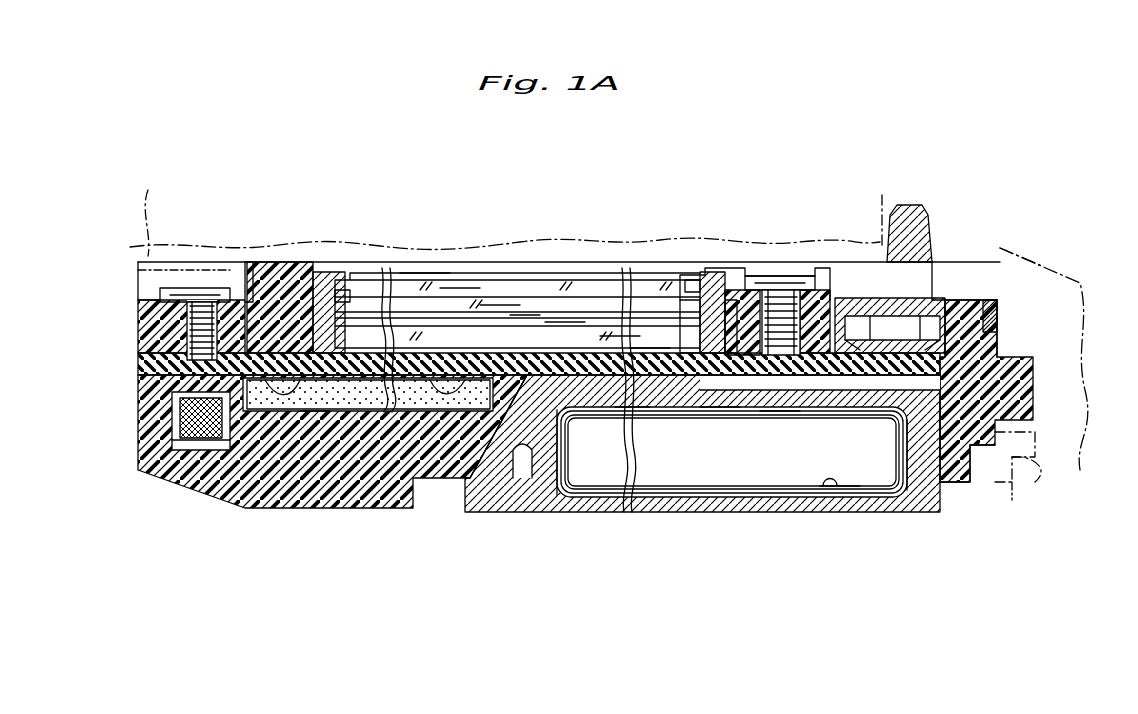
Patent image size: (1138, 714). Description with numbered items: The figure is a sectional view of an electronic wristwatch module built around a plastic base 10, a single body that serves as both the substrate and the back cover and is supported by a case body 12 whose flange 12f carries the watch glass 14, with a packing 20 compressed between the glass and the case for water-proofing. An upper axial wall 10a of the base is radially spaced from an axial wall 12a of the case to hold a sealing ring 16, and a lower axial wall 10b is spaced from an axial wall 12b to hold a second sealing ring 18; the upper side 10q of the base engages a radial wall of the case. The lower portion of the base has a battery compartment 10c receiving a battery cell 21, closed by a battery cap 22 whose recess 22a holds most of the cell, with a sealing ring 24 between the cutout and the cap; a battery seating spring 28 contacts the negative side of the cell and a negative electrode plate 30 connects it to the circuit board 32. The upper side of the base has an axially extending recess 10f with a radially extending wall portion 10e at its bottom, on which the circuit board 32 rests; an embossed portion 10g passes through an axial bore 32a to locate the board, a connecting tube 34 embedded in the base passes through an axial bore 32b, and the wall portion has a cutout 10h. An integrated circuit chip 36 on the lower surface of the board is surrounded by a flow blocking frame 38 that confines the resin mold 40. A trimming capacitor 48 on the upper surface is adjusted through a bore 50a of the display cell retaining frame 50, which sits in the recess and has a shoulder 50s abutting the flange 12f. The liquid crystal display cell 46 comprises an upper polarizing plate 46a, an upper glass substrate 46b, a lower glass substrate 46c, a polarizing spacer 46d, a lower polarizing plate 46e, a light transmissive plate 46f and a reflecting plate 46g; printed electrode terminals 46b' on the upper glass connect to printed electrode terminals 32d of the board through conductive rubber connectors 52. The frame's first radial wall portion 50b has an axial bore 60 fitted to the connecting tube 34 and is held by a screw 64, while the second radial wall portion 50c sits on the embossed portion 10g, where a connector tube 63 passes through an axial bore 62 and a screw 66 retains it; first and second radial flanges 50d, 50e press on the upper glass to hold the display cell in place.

The plastic base 10 is at (415, 435).
The axial wall 10a is at (1000, 310).
The axial wall 10b is at (1000, 455).
The battery compartment 10c is at (938, 450).
The radially extending wall portion 10e is at (578, 410).
The axially extending recess 10f is at (955, 300).
The embossed portion 10g is at (732, 452).
The cutout 10h is at (515, 470).
The upper side 10q is at (985, 305).
The case body 12 is at (1080, 470).
The axial wall 12a is at (1035, 263).
The axial wall 12b is at (1020, 472).
The flange 12f is at (895, 135).
The watch glass 14 is at (918, 262).
The sealing ring 16 is at (992, 332).
The second sealing ring 18 is at (1010, 485).
The packing 20 is at (940, 300).
The battery cell 21 is at (732, 452).
The battery cap 22 is at (690, 497).
The recess 22a is at (845, 430).
The sealing ring 24 is at (535, 440).
The battery seating spring 28 is at (735, 410).
The negative electrode plate 30 is at (830, 486).
The circuit board 32 is at (445, 420).
The axial bore 32a is at (872, 430).
The axial bore 32b is at (218, 455).
The printed electrode terminals 32d is at (312, 420).
The connecting tube 34 is at (182, 442).
The integrated circuit chip 36 is at (355, 378).
The flow blocking frame 38 is at (278, 420).
The resin mold 40 is at (373, 378).
The liquid crystal display cell 46 is at (578, 262).
The upper polarizing plate 46a is at (426, 273).
The upper glass substrate 46b is at (460, 240).
The printed electrode terminals 46b' is at (524, 216).
The lower glass substrate 46c is at (496, 305).
The polarizing spacer 46d is at (522, 315).
The lower polarizing plate 46e is at (560, 322).
The light transmissive plate 46f is at (616, 336).
The reflecting plate 46g is at (650, 348).
The trimming capacitor 48 is at (848, 298).
The display cell retaining frame 50 is at (790, 285).
The bore 50a is at (828, 292).
The first radial wall portion 50b is at (180, 288).
The second radial wall portion 50c is at (780, 292).
The first radial flange 50d is at (320, 275).
The second radial flange 50e is at (678, 300).
The shoulder 50s is at (140, 282).
The electrically conductive rubber connectors 52 is at (370, 290).
The axial bore 60 is at (250, 280).
The axial bore 62 is at (752, 276).
The connector tube 63 is at (782, 414).
The screw 64 is at (207, 285).
The screw 66 is at (735, 300).